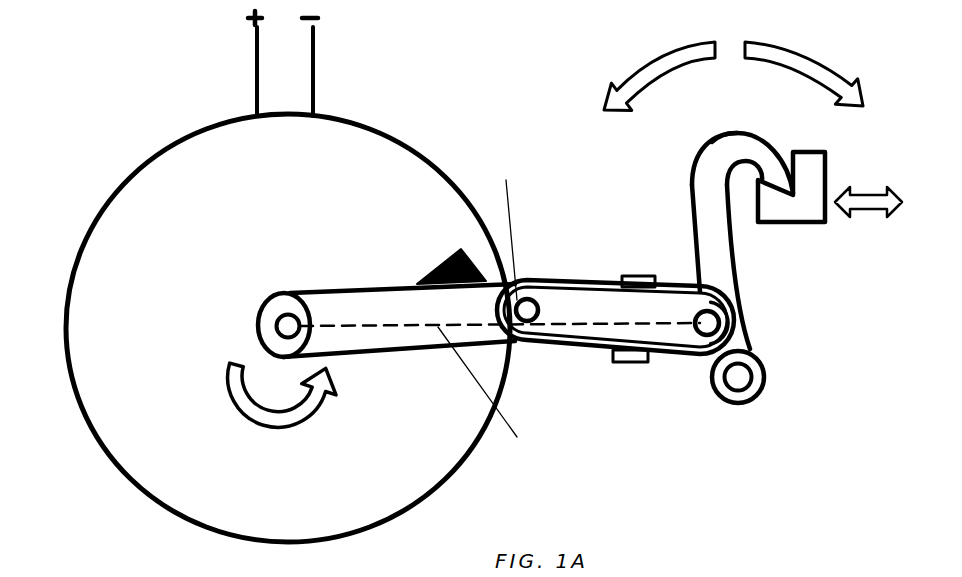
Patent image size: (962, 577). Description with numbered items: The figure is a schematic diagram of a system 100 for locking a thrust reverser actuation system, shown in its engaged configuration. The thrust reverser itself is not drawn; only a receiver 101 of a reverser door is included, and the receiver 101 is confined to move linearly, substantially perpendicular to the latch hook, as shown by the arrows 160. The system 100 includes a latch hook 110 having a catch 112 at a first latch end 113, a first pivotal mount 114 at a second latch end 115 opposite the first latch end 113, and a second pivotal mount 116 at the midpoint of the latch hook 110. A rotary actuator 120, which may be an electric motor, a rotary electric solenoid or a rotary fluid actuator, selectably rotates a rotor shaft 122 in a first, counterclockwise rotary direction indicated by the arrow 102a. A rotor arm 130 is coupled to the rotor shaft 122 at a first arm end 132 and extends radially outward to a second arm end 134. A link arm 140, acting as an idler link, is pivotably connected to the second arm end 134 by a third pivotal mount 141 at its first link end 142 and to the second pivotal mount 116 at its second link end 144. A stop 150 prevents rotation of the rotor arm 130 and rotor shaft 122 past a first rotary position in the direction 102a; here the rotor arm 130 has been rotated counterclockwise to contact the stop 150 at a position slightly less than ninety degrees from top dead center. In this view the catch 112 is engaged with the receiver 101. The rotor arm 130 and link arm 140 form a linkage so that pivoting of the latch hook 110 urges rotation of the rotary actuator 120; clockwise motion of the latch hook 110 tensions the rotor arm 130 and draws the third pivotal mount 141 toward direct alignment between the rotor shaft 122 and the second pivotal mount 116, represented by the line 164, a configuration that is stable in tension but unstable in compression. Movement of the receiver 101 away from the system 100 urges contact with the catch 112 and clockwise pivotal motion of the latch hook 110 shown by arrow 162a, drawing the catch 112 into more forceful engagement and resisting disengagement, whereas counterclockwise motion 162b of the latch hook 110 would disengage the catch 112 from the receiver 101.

The system 100 is at (85, 100).
The rotary actuator 120 is at (66, 295).
The rotor shaft 122 is at (278, 325).
The first arm end 132 is at (266, 288).
The rotor arm 130 is at (396, 354).
The stop 150 is at (446, 256).
The line 164 is at (517, 437).
The first rotary direction 102a is at (242, 396).
The link arm 140 is at (612, 284).
The first link end 142 is at (540, 355).
The second link end 144 is at (688, 376).
The second arm end 134 is at (530, 272).
The third pivotal mount 141 is at (506, 180).
The latch hook 110 is at (692, 222).
The catch 112 is at (760, 140).
The first latch end 113 is at (704, 136).
The receiver 101 is at (826, 165).
The arrows 160 is at (870, 210).
The arrow 162a is at (824, 55).
The counterclockwise motion 162b is at (656, 55).
The second pivotal mount 116 is at (723, 312).
The second latch end 115 is at (776, 368).
The first pivotal mount 114 is at (757, 380).